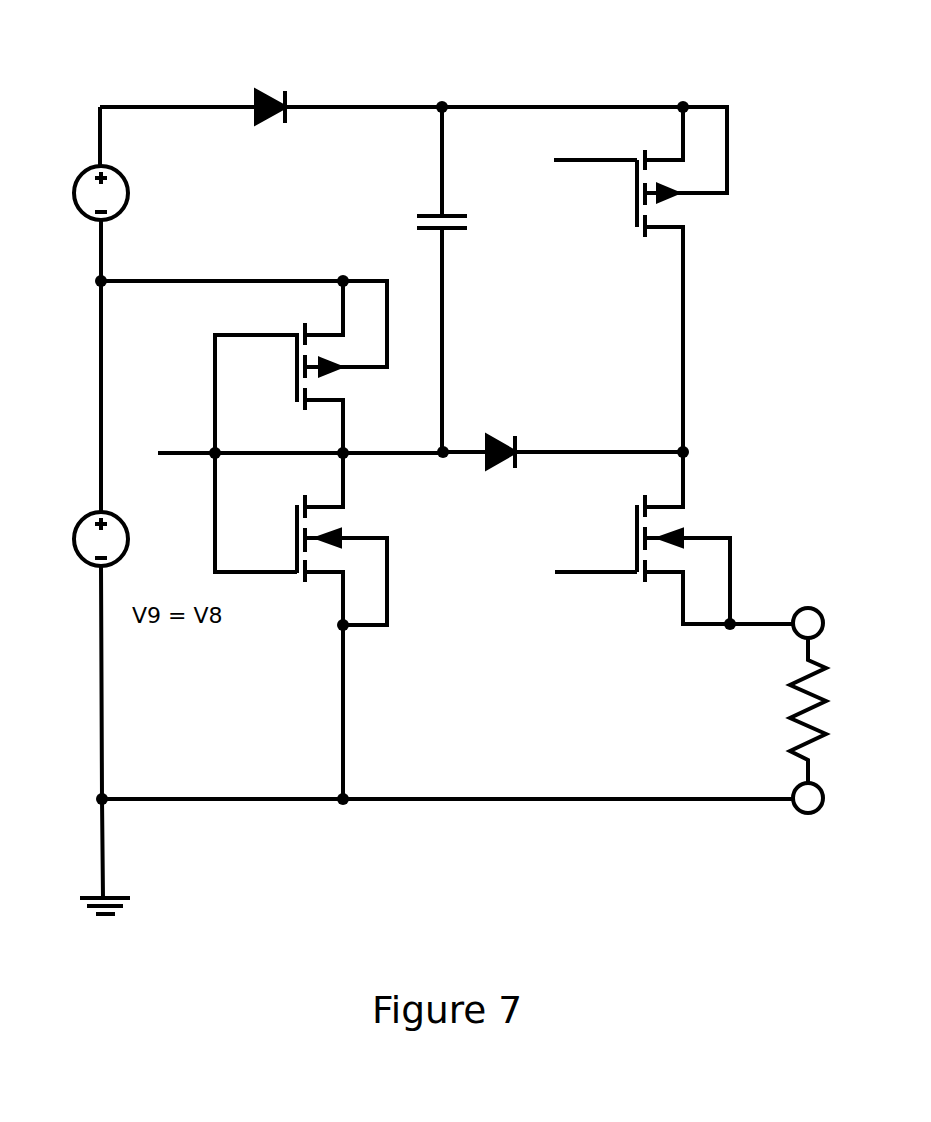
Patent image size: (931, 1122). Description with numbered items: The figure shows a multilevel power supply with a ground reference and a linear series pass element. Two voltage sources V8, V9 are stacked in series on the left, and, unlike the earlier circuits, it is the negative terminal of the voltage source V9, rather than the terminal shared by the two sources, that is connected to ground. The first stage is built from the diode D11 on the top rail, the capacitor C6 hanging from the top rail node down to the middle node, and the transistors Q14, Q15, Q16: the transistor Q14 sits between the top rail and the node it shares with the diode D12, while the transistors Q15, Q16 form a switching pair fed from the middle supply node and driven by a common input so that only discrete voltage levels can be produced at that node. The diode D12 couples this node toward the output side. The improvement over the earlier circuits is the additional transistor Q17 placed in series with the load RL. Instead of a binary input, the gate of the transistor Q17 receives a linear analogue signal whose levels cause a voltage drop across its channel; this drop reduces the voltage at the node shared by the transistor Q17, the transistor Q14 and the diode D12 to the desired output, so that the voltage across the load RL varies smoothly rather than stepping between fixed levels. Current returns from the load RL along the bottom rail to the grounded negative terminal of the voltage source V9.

The voltage source V8 is at (83, 193).
The voltage source V9 is at (85, 539).
The diode D11 is at (272, 122).
The diode D12 is at (502, 466).
The capacitor C6 is at (451, 279).
The transistor Q14 is at (618, 279).
The transistor Q15 is at (301, 367).
The transistor Q16 is at (301, 626).
The transistor Q17 is at (674, 538).
The load RL is at (789, 710).